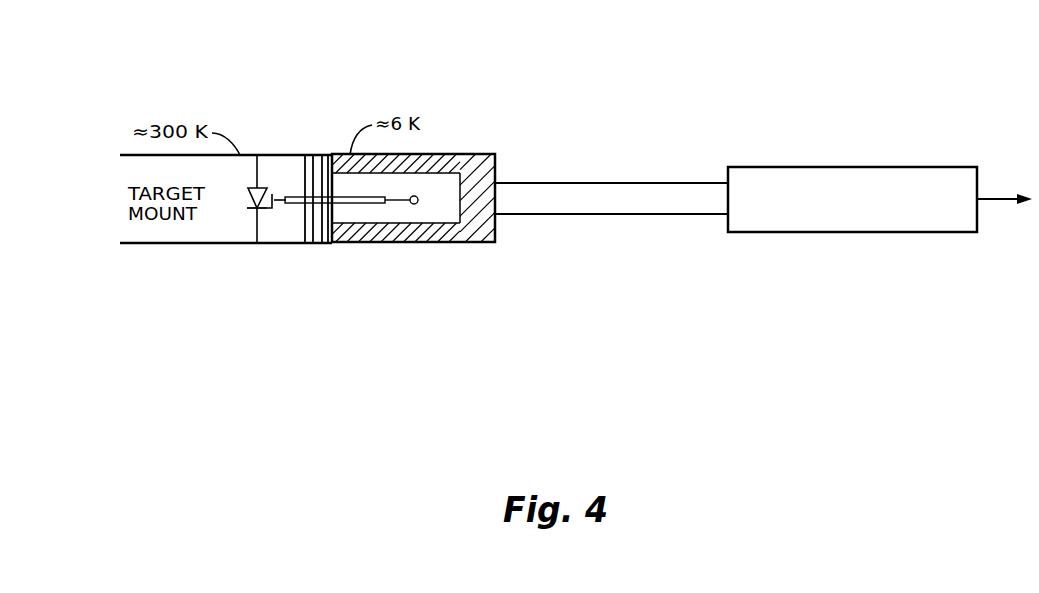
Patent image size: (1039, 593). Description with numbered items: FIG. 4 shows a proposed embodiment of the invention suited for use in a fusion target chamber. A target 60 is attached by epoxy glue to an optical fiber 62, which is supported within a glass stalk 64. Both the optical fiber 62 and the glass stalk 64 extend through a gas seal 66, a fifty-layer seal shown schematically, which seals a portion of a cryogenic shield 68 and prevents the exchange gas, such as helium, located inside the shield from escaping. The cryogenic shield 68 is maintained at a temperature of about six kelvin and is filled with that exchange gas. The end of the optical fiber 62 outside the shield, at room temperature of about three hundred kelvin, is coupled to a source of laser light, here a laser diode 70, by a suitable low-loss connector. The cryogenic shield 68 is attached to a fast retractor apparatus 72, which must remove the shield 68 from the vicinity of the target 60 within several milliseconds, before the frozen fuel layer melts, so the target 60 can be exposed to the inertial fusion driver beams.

The target 60 is at (388, 243).
The optical fiber 62 is at (414, 196).
The glass stalk 64 is at (297, 197).
The gas seal 66 is at (313, 243).
The cryogenic shield 68 is at (482, 243).
The laser diode 70 is at (257, 212).
The fast retractor apparatus 72 is at (763, 199).